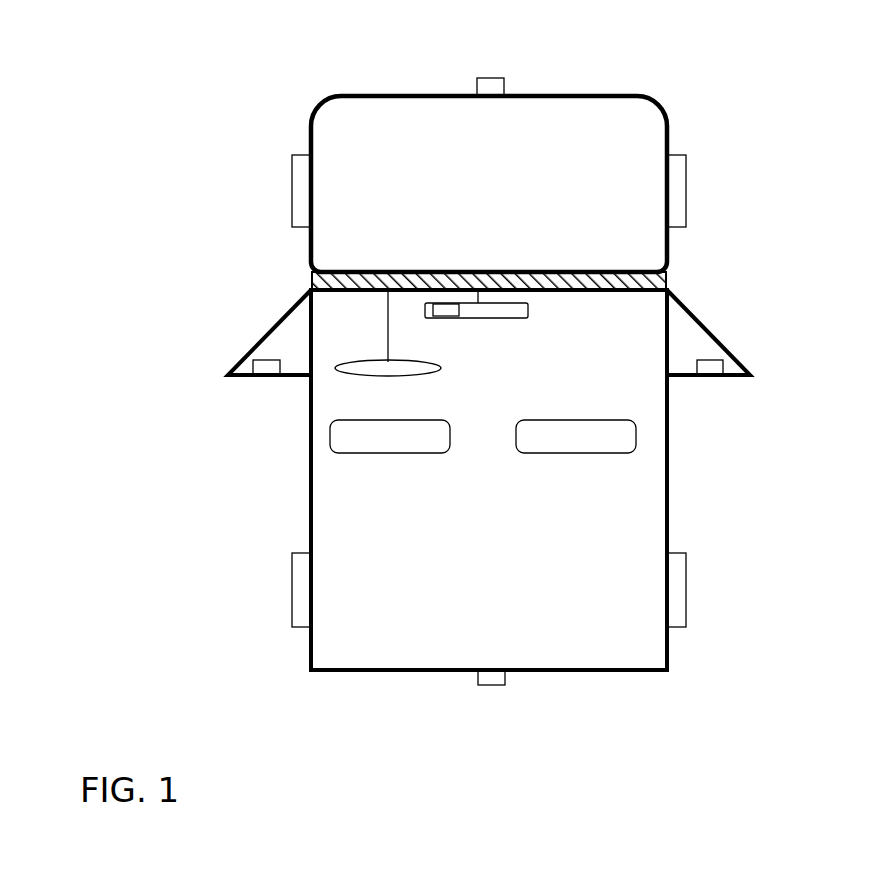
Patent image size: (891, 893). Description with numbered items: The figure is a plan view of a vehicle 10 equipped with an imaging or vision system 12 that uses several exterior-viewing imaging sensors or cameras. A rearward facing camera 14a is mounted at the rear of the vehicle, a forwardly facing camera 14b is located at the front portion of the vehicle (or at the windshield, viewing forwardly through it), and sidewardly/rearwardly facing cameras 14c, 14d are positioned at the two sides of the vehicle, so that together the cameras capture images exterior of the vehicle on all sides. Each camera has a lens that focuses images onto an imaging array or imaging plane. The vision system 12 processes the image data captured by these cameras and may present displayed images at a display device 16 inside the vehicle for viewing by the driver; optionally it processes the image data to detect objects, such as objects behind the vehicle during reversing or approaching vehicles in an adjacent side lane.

The vehicle 10 is at (226, 102).
The vision system 12 is at (433, 706).
The rearward facing camera 14a is at (493, 683).
The forwardly facing camera 14b is at (488, 82).
The sidewardly/rearwardly facing camera 14c is at (262, 365).
The sidewardly/rearwardly facing camera 14d is at (710, 370).
The display device 16 is at (453, 312).